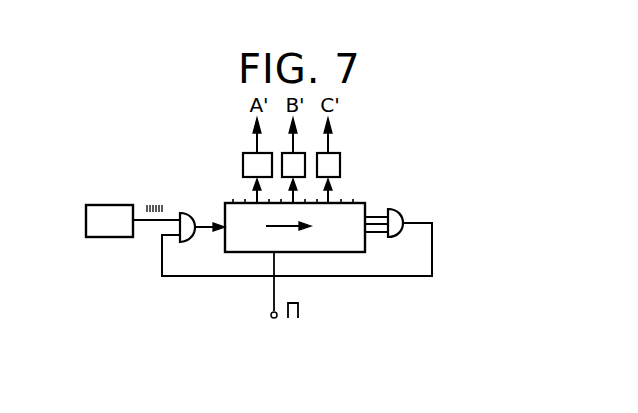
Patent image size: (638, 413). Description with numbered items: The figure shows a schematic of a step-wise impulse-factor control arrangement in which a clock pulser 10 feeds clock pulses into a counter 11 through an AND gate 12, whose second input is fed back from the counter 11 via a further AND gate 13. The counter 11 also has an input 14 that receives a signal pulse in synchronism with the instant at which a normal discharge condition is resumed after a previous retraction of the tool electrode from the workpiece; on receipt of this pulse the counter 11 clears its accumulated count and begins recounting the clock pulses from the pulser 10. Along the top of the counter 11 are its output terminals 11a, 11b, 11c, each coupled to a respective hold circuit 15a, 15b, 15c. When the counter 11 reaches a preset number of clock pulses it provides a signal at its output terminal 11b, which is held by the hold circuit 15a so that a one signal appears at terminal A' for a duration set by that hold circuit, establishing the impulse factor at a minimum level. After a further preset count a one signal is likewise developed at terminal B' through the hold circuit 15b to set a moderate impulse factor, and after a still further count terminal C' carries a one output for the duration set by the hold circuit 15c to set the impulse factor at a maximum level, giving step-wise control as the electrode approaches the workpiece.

The clock pulser 10 is at (106, 237).
The counter 11 is at (356, 252).
The output terminal 11a is at (240, 189).
The output terminal 11b is at (291, 189).
The output terminal 11c is at (346, 189).
The AND gate 12 is at (187, 241).
The AND gate 13 is at (395, 238).
The input 14 is at (269, 291).
The hold circuit 15a is at (243, 160).
The hold circuit 15b is at (282, 165).
The hold circuit 15c is at (340, 165).